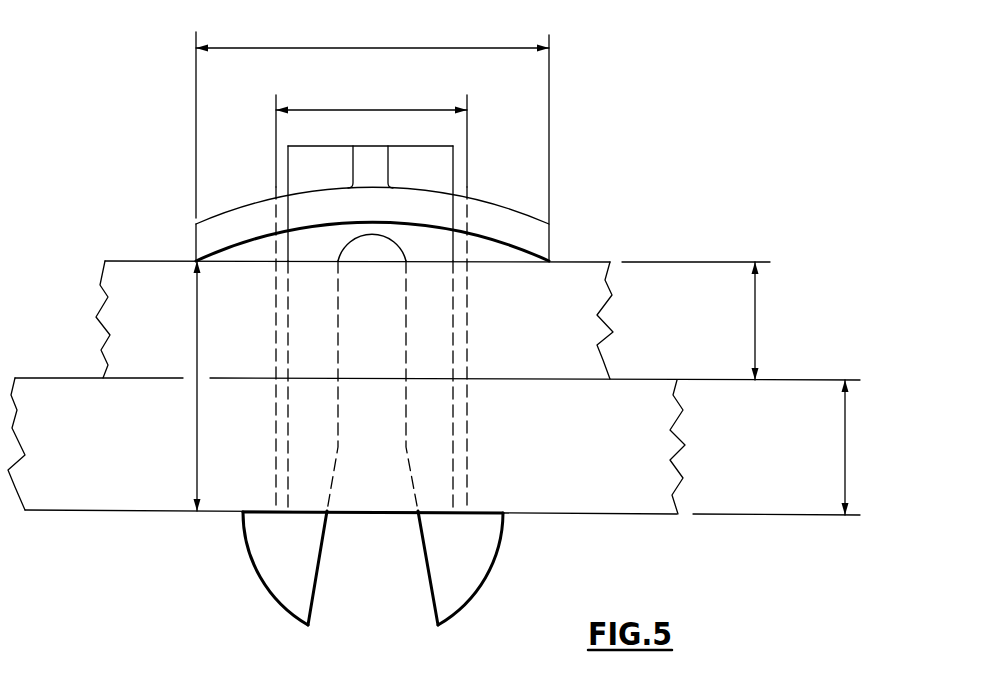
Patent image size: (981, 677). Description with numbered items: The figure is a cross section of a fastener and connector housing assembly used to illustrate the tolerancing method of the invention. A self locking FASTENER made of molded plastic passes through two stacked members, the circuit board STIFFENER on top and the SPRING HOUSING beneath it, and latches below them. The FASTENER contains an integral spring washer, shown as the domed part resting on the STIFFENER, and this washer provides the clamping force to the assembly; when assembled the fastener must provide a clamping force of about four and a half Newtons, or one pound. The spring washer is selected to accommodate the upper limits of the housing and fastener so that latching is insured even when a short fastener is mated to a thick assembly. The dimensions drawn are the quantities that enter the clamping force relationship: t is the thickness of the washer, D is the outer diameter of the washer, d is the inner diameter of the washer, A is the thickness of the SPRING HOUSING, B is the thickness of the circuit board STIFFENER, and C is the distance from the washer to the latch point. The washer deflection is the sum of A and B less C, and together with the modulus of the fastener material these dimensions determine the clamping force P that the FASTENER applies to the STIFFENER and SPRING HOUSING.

The circuit board stiffener STIFFENER is at (161, 258).
The self locking fastener FASTENER is at (259, 586).
The spring housing SPRING HOUSING is at (563, 516).
The outer diameter of the washer D is at (372, 122).
The inner diameter of the washer d is at (371, 298).
The thickness of the washer t is at (552, 248).
The thickness of the spring housing A is at (776, 447).
The thickness of the circuit board stiffener B is at (696, 321).
The distance from the washer to the latch point C is at (183, 386).